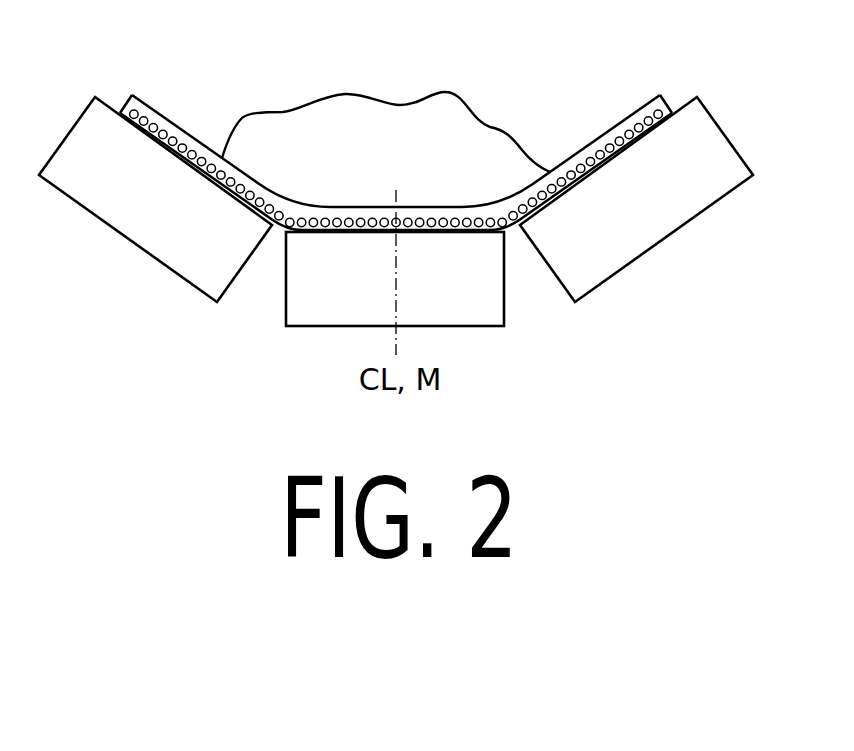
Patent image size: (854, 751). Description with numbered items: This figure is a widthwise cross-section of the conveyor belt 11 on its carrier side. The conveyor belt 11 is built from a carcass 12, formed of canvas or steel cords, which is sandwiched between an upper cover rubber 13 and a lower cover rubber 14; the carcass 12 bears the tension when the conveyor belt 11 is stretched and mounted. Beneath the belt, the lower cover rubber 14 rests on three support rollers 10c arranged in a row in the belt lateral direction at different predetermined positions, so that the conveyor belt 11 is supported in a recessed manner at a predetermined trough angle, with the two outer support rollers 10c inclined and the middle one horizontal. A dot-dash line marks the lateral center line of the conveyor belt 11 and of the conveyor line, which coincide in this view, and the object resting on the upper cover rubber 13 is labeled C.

The support roller 10c is at (133, 223).
The conveyor belt 11 is at (396, 158).
The carcass 12 is at (612, 134).
The upper cover rubber 13 is at (202, 153).
The lower cover rubber 14 is at (277, 230).
The electronic component C is at (398, 108).